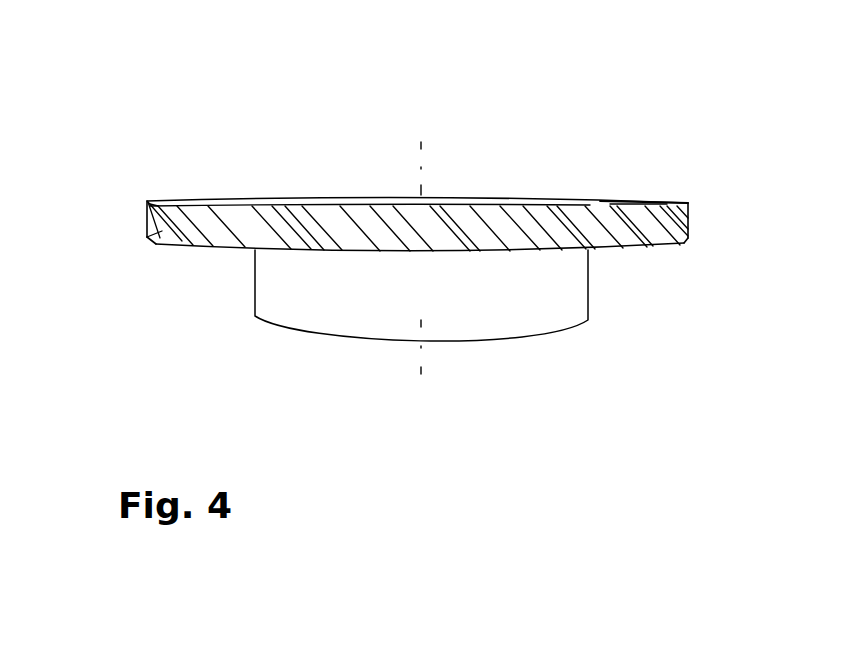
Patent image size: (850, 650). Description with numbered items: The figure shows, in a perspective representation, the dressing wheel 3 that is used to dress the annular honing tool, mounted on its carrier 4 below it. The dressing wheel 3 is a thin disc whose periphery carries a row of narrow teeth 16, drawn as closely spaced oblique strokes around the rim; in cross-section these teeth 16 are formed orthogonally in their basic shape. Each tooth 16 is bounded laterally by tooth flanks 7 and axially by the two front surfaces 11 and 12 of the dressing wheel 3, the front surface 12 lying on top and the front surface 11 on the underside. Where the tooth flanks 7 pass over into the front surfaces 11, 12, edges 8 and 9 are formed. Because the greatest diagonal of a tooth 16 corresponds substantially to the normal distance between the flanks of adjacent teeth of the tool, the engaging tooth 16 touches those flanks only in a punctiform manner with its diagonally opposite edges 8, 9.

The dressing wheel 3 is at (311, 164).
The carrier of the dressing wheel 4 is at (537, 305).
The tooth flanks of the dressing wheel 7 is at (700, 209).
The edge 8 is at (147, 237).
The edge 9 is at (158, 201).
The front surface of the dressing wheel 11 is at (399, 254).
The front surface of the dressing wheel 12 is at (643, 198).
The teeth of the dressing wheel 16 is at (192, 218).